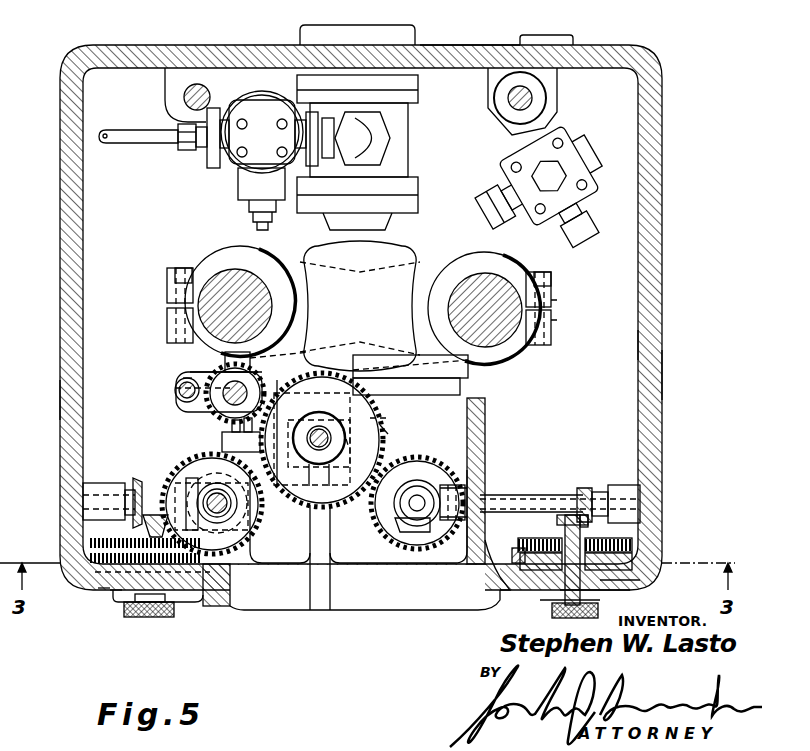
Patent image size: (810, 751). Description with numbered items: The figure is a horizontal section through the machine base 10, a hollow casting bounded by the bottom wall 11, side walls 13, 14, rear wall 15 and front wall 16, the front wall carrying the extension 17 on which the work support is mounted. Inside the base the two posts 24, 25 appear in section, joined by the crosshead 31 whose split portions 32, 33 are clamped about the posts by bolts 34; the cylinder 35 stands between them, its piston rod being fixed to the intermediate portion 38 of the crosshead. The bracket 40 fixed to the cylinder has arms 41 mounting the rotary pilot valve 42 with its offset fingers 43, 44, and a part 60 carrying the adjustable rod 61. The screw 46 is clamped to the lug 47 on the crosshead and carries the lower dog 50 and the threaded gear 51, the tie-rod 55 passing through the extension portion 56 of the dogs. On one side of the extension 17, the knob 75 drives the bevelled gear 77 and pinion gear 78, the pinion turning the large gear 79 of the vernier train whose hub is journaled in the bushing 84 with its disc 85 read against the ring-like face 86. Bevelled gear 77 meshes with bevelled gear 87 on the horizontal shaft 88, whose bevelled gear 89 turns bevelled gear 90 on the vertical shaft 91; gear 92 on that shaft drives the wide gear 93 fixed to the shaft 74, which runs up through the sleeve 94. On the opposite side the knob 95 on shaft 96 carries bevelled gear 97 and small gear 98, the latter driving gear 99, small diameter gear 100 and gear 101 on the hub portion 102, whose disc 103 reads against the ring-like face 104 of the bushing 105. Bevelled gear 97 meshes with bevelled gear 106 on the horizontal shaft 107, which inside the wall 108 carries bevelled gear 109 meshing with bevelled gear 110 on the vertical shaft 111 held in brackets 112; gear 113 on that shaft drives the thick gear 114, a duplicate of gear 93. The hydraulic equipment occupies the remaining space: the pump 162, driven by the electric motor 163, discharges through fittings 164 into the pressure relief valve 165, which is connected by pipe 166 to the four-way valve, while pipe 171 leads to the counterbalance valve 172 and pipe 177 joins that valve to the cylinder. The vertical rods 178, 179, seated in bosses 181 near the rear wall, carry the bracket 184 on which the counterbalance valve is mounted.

The base 10 is at (666, 293).
The bottom wall 11 is at (617, 345).
The side wall 13 is at (62, 400).
The side wall 14 is at (650, 374).
The rear wall 15 is at (458, 45).
The front wall 16 is at (272, 598).
The extension 17 is at (306, 610).
The post 24 is at (223, 280).
The post 25 is at (492, 276).
The crosshead 31 is at (552, 330).
The split portion 32 is at (167, 333).
The split portion 33 is at (166, 288).
The bolt 34 is at (182, 268).
The cylinder 35 is at (388, 253).
The intermediate portion 38 is at (440, 262).
The bracket 40 is at (470, 378).
The arm 41 is at (312, 432).
The rotary pilot valve 42 is at (344, 467).
The finger 43 is at (230, 426).
The finger 44 is at (224, 438).
The screw 46 is at (222, 398).
The lug 47 is at (205, 364).
The lower dog 50 is at (178, 380).
The gear 51 is at (175, 388).
The tie-rod 55 is at (180, 394).
The extension portion 56 is at (185, 378).
The part of bracket 60 is at (225, 354).
The rod 61 is at (266, 348).
The shaft 74 is at (326, 434).
The knob 75 is at (137, 618).
The bevelled gear 77 is at (120, 540).
The pinion gear 78 is at (150, 545).
The gear 79 is at (95, 556).
The bushing 84 is at (95, 572).
The disc 85 is at (118, 592).
The ring-like face 86 is at (105, 590).
The bevelled gear 87 is at (120, 505).
The horizontal shaft 88 is at (130, 487).
The bevelled gear 89 is at (178, 490).
The bevelled gear 90 is at (220, 482).
The vertical shaft 91 is at (213, 480).
The gear 92 is at (188, 486).
The gear 93 is at (388, 434).
The sleeve 94 is at (348, 432).
The knob 95 is at (600, 600).
The shaft 96 is at (582, 515).
The bevelled gear 97 is at (566, 518).
The small gear 98 is at (550, 540).
The gear 99 is at (536, 540).
The small diameter gear 100 is at (640, 554).
The gear 101 is at (514, 560).
The hub portion 102 is at (610, 568).
The disc 103 is at (630, 590).
The ring-like face 104 is at (640, 582).
The bushing 105 is at (560, 600).
The bevelled gear 106 is at (592, 490).
The horizontal shaft 107 is at (645, 505).
The wall 108 is at (480, 416).
The bevelled gear 109 is at (440, 522).
The bevelled gear 110 is at (417, 512).
The vertical shaft 111 is at (412, 512).
The bracket 112 is at (405, 522).
The gear 113 is at (396, 530).
The gear 114 is at (390, 418).
The pump 162 is at (400, 160).
The electric motor 163 is at (348, 40).
The fitting 164 is at (366, 140).
The pressure relief valve 165 is at (259, 83).
The pipe 166 is at (143, 145).
The pipe 171 is at (480, 202).
The counterbalance valve 172 is at (584, 134).
The pipe 177 is at (588, 246).
The rod 178 is at (184, 98).
The rod 179 is at (508, 97).
The boss 181 is at (500, 112).
The bracket 184 is at (522, 72).